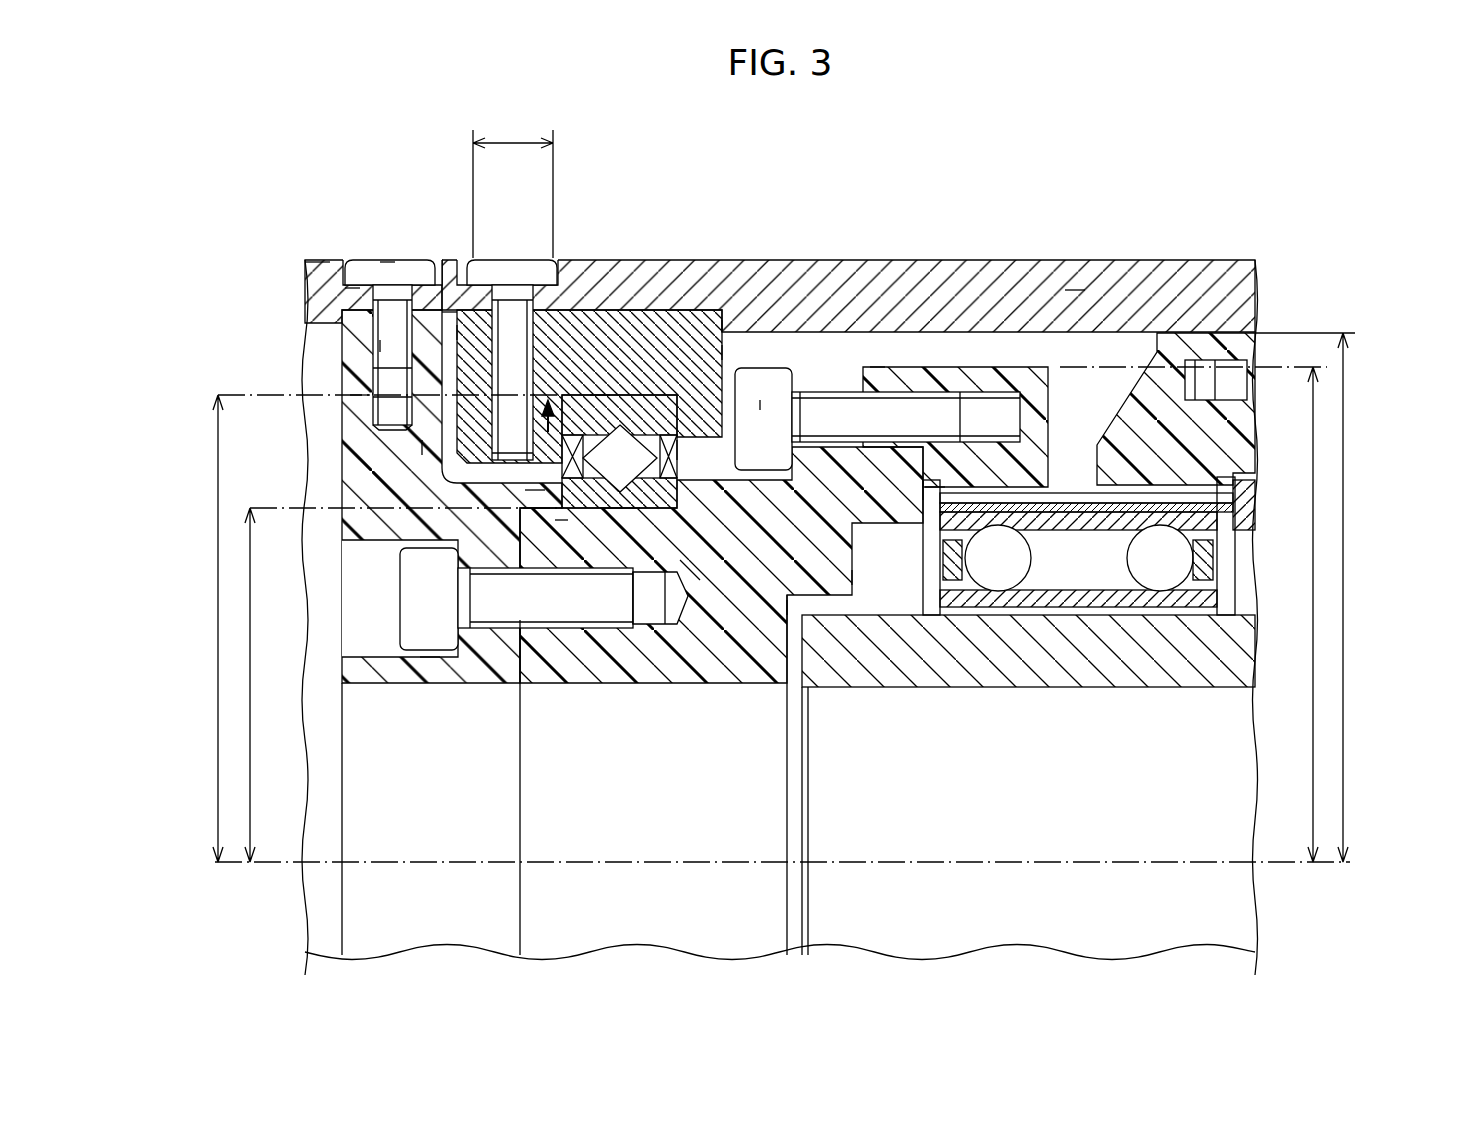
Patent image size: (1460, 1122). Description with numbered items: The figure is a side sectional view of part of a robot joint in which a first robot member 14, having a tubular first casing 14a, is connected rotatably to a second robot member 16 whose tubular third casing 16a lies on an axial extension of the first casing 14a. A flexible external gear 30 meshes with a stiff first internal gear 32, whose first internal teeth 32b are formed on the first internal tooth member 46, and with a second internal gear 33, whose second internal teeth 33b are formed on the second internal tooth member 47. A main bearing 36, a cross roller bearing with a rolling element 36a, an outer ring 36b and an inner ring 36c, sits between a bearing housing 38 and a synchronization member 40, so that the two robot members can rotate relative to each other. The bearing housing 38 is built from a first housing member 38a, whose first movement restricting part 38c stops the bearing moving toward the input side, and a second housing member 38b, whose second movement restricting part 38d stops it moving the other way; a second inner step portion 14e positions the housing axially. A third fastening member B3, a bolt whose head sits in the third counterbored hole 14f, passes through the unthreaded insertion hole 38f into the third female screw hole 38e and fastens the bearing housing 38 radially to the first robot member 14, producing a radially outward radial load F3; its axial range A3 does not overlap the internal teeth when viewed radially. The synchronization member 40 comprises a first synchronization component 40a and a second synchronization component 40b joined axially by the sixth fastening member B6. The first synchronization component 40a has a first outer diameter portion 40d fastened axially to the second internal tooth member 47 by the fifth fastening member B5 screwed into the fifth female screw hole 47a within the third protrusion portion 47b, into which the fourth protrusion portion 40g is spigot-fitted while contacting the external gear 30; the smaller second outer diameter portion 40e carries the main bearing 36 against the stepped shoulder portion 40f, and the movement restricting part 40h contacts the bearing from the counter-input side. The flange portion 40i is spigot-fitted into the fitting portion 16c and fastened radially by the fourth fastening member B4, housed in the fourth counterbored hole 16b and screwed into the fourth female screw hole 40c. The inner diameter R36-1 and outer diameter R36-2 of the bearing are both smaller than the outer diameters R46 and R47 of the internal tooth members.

The first robot member 14 is at (955, 250).
The first casing 14a is at (1078, 288).
The second inner step portion 14e is at (722, 330).
The third counterbored hole 14f is at (452, 318).
The second robot member 16 is at (318, 255).
The third casing 16a is at (315, 262).
The fourth counterbored hole 16b is at (385, 262).
The fitting portion 16c is at (357, 288).
The external gear 30 is at (1082, 620).
The first internal gear 32 is at (1170, 530).
The first internal teeth 32b is at (1160, 478).
The second internal gear 33 is at (1000, 535).
The second internal teeth 33b is at (1005, 440).
The main bearing 36 is at (630, 420).
The rolling element 36a is at (628, 515).
The outer ring 36b is at (598, 395).
The inner ring 36c is at (662, 525).
The bearing housing 38 is at (680, 300).
The first housing member 38a is at (722, 352).
The second housing member 38b is at (428, 447).
The first movement restricting part 38c is at (853, 577).
The second movement restricting part 38d is at (560, 520).
The third female screw hole 38e is at (500, 625).
The insertion hole 38f is at (462, 332).
The synchronization member 40 is at (338, 437).
The first synchronization component 40a is at (690, 560).
The second synchronization component 40b is at (430, 660).
The fourth female screw hole 40c is at (382, 346).
The first outer diameter portion 40d is at (765, 405).
The second outer diameter portion 40e is at (610, 500).
The stepped shoulder portion 40f is at (735, 590).
The fourth protrusion portion 40g is at (862, 500).
The movement restricting part 40h is at (535, 495).
The flange portion 40i is at (363, 395).
The first internal tooth member 46 is at (1210, 345).
The second internal tooth member 47 is at (915, 368).
The fifth female screw hole 47a is at (930, 530).
The third protrusion portion 47b is at (878, 370).
The axial range of the third fastening member A3 is at (513, 172).
The third fastening member B3 is at (513, 262).
The fourth fastening member B4 is at (398, 260).
The fifth fastening member B5 is at (768, 368).
The sixth fastening member B6 is at (425, 660).
The radial load F3 is at (552, 395).
The inner diameter of the main bearing R36-1 is at (218, 722).
The outer diameter of the main bearing R36-2 is at (250, 625).
The outer diameter of the first internal tooth member R46 is at (1343, 600).
The outer diameter of the second internal tooth member R47 is at (1313, 640).